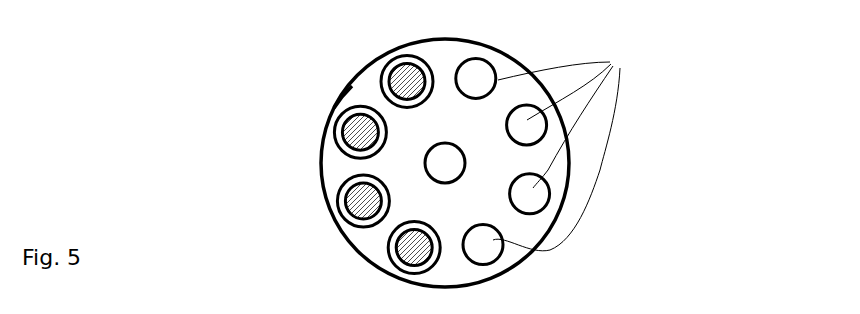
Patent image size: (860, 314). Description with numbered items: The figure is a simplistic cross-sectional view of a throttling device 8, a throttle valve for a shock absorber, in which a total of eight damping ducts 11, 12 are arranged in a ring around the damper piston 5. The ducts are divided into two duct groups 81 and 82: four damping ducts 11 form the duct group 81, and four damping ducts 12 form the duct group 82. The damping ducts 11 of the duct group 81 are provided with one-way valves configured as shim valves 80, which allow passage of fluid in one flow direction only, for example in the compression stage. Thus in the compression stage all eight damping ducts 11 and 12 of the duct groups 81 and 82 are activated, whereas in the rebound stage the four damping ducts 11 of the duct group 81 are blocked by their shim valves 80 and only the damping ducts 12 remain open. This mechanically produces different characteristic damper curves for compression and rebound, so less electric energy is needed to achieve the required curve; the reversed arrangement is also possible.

The damper piston 5 is at (447, 143).
The throttling device 8 is at (234, 124).
The damping ducts 11 is at (396, 68).
The damping ducts 12 is at (494, 72).
The shim valves 80 is at (335, 134).
The duct group 81 is at (318, 108).
The duct group 82 is at (564, 148).